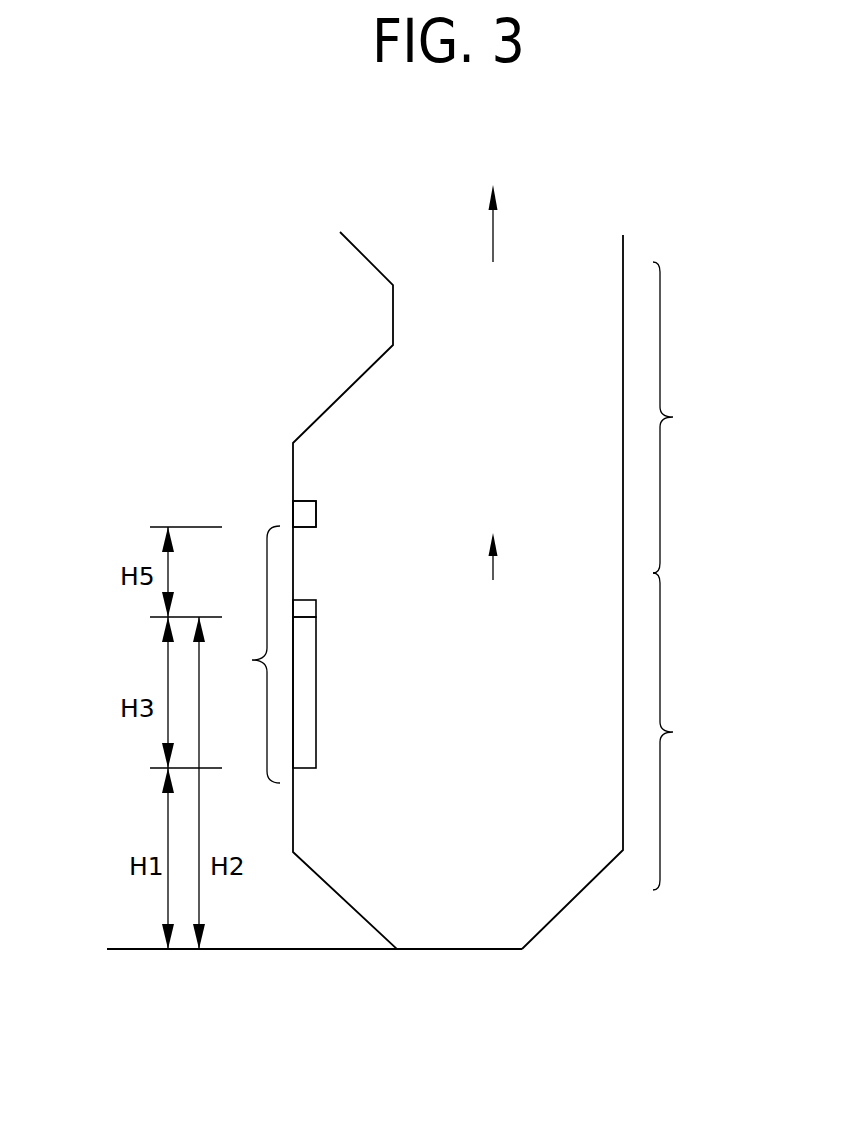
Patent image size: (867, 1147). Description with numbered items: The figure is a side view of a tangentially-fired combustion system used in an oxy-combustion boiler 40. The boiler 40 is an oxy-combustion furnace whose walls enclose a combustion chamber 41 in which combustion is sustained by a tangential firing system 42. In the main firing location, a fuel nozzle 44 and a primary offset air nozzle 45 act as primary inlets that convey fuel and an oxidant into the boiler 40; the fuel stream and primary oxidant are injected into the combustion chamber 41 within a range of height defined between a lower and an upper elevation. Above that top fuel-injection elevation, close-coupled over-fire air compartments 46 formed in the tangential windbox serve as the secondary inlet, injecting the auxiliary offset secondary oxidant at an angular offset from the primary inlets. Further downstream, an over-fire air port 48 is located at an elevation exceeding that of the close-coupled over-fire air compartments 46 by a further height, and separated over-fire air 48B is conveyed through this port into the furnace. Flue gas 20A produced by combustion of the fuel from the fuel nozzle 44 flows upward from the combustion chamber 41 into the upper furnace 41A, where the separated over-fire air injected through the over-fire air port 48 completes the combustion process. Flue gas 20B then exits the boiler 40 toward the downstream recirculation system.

The boiler 40 is at (623, 252).
The upper furnace 41A is at (696, 417).
The combustion chamber 41 is at (689, 731).
The tangential firing system 42 is at (249, 654).
The fuel nozzle 44 is at (425, 699).
The primary offset air nozzle 45 is at (323, 617).
The close-coupled over-fire air compartments 46 is at (316, 609).
The over-fire air port 48 is at (305, 501).
The separated overfire air 48B is at (316, 515).
The flue gas 20A is at (524, 556).
The flue gas 20B is at (502, 204).